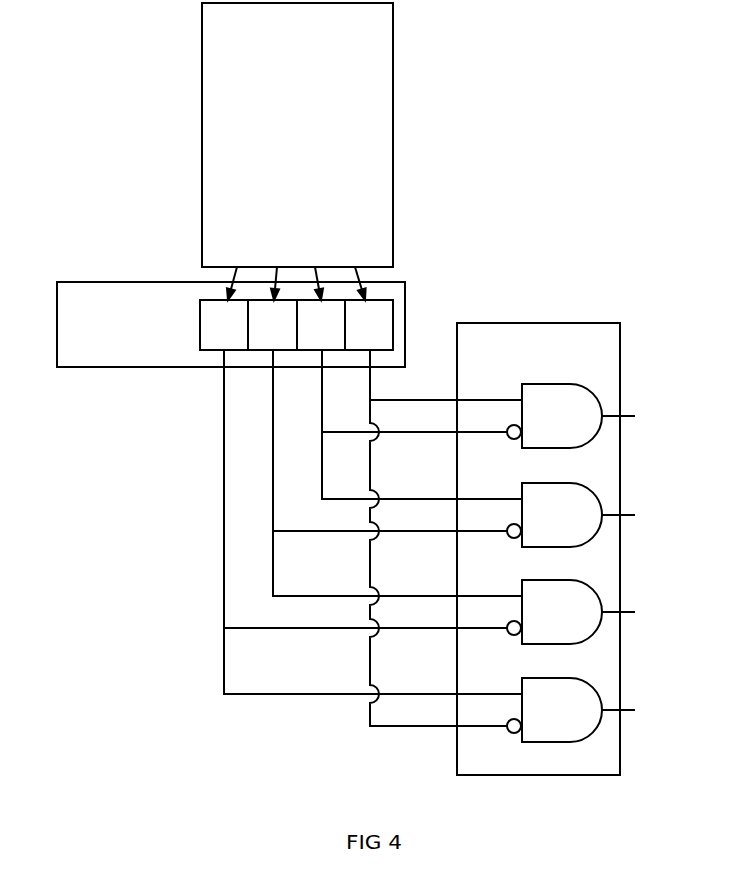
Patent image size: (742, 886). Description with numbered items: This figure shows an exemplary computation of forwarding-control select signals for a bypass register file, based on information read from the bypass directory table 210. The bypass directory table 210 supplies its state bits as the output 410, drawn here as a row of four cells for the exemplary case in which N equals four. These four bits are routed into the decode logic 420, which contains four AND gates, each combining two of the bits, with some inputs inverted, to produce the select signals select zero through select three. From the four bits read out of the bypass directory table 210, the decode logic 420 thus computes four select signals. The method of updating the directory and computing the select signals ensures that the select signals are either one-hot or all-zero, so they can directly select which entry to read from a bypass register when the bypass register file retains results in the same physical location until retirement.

The bypass directory table 210 is at (297, 151).
The output of the bypass directory state bits 410 is at (231, 324).
The decode logic 420 is at (582, 549).